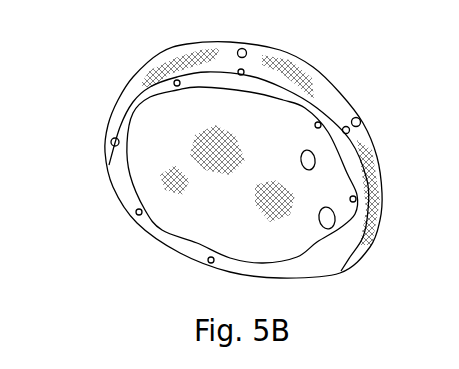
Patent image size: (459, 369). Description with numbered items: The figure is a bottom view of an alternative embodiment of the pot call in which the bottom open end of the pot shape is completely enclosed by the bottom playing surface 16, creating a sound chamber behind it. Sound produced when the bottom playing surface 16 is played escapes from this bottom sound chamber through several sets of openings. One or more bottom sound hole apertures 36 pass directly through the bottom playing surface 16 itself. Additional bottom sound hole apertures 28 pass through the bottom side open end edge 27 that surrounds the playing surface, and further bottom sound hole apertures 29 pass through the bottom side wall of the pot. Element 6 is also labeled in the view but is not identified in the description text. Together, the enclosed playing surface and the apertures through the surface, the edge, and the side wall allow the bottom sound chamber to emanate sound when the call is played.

The flange 6 is at (153, 73).
The bottom side open end edge 27 is at (135, 105).
The bottom sound hole apertures 28 is at (110, 142).
The bottom sound hole apertures 29 is at (348, 132).
The bottom playing surface 16 is at (173, 198).
The bottom sound hole apertures 36 is at (330, 222).